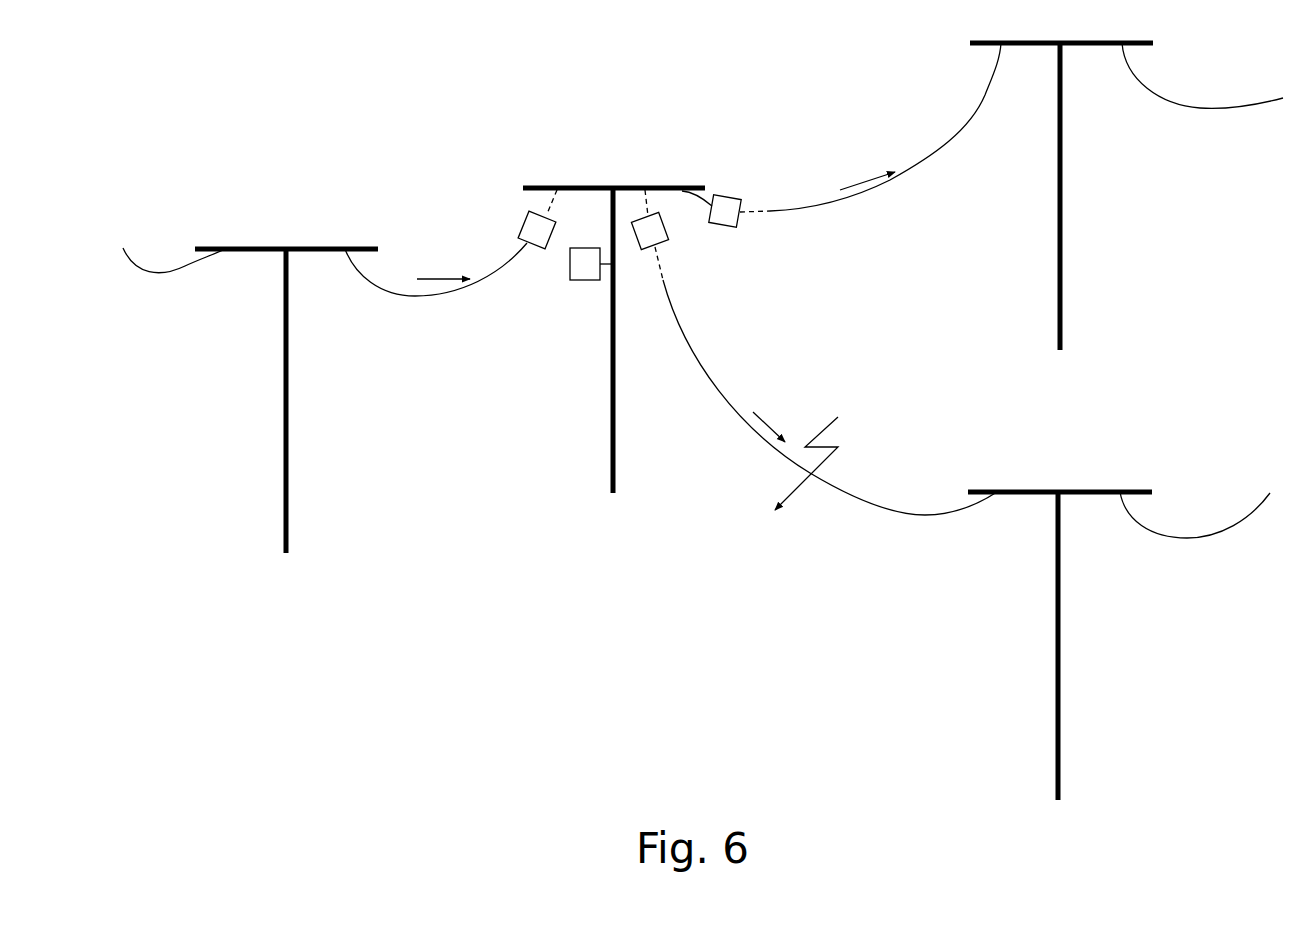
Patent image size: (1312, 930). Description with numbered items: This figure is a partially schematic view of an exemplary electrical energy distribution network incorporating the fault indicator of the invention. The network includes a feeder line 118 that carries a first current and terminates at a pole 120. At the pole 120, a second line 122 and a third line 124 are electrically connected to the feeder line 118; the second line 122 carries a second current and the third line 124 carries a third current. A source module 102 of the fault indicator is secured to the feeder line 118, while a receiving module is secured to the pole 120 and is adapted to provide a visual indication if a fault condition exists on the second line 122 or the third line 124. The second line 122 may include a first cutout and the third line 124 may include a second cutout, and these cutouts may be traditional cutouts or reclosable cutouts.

The source module 102 is at (524, 221).
The feeder line 118 is at (433, 297).
The pole 120 is at (613, 418).
The second line 122 is at (977, 118).
The third line 124 is at (920, 515).